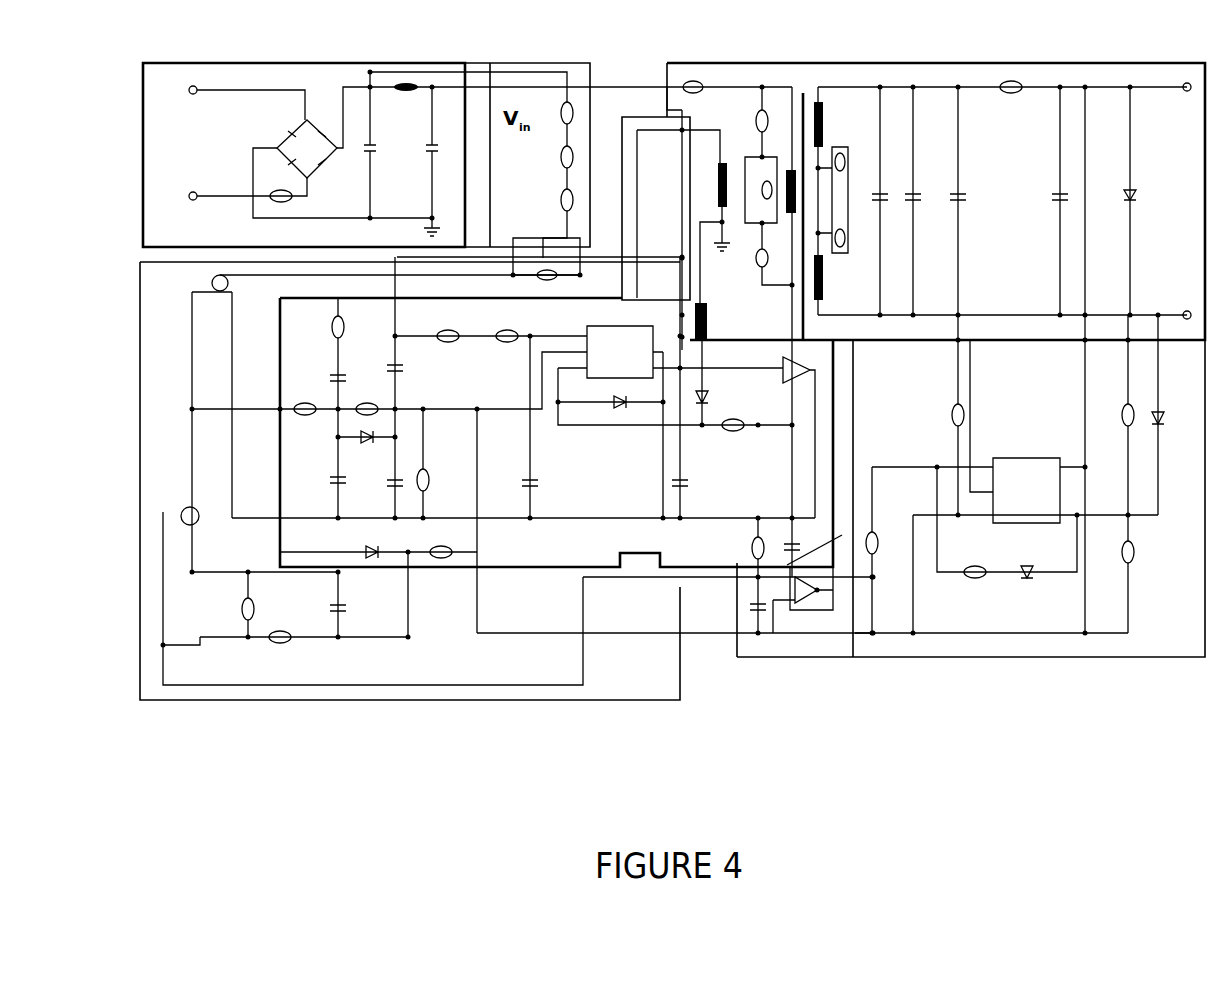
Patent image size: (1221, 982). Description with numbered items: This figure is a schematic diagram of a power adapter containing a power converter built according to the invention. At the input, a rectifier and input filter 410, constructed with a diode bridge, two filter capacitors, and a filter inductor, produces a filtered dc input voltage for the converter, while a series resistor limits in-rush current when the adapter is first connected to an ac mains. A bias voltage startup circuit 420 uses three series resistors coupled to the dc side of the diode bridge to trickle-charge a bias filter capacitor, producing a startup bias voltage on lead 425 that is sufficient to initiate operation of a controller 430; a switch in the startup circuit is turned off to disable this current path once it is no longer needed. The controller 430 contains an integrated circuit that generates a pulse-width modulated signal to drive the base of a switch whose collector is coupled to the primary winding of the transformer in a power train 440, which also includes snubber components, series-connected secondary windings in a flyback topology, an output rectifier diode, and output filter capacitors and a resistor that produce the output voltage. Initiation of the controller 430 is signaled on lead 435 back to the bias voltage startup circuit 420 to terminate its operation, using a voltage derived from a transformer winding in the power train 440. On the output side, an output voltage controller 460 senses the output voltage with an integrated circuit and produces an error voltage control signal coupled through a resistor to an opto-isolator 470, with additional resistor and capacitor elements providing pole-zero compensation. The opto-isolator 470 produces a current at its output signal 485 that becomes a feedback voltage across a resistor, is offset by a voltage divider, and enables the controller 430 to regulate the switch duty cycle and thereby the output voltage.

The rectifier and input filter 410 is at (236, 171).
The bias voltage startup circuit 420 is at (471, 676).
The lead 425 is at (576, 283).
The controller 430 is at (626, 500).
The lead 435 is at (382, 656).
The power train 440 is at (1041, 282).
The output voltage controller 460 is at (1049, 407).
The opto-isolator 470 is at (841, 632).
The output signal 485 is at (717, 653).